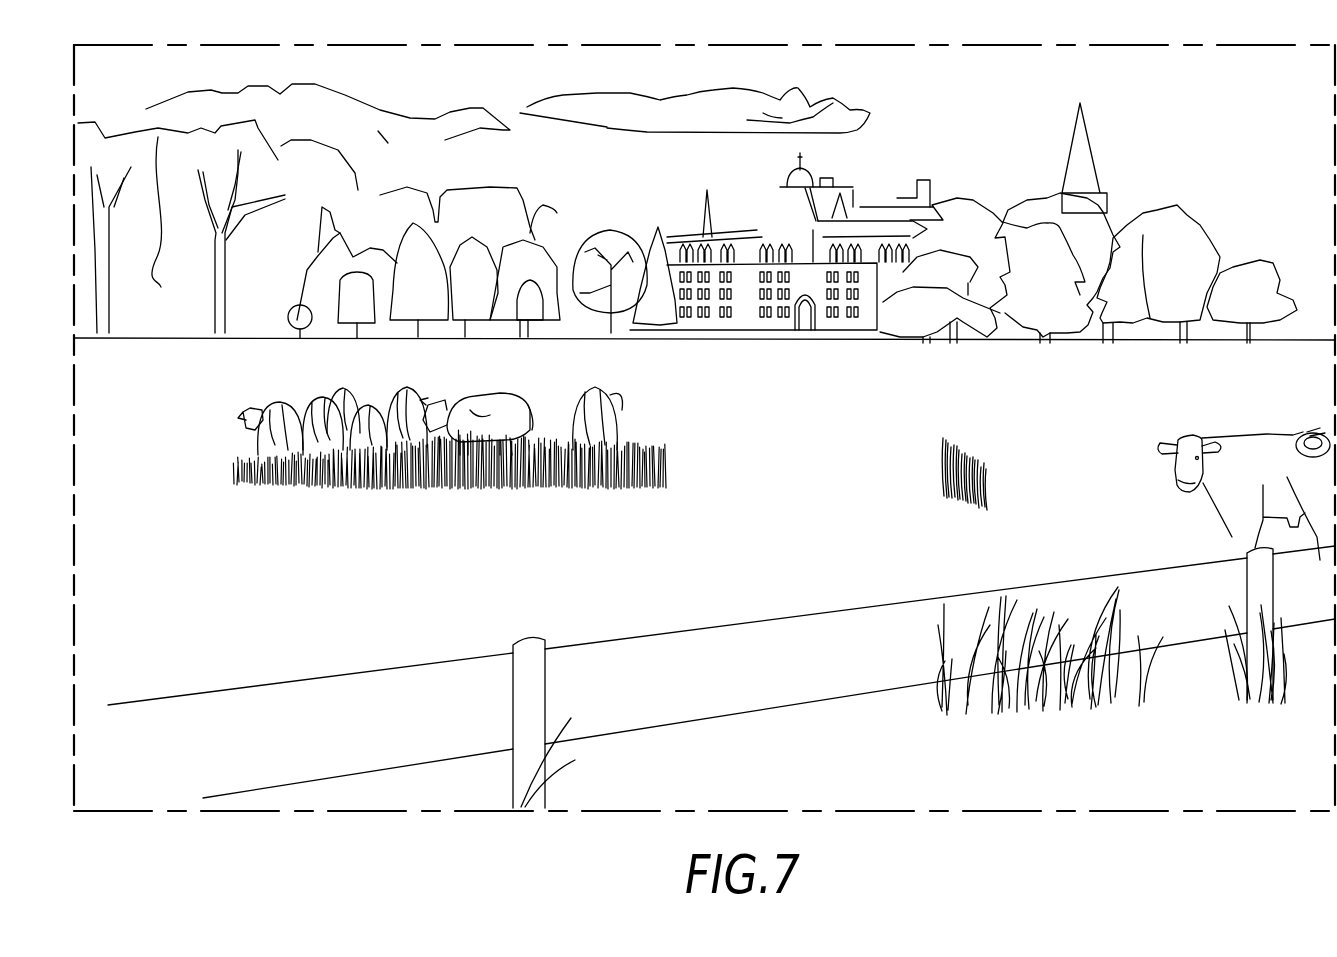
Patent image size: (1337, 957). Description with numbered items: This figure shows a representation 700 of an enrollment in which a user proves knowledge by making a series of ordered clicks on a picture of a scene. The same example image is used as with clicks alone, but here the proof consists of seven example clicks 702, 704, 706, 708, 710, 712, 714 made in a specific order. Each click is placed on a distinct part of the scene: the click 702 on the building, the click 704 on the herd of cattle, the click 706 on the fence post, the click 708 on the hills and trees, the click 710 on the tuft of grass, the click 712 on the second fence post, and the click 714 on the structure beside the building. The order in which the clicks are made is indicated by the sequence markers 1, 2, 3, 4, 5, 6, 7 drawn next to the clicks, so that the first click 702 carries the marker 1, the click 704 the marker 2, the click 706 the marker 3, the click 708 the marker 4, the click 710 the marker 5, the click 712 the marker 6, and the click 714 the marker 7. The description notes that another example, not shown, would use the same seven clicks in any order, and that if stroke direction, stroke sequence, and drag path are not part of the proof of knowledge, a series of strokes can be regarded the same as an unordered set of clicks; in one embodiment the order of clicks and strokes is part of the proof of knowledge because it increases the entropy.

The representation 700 is at (56, 537).
The click 702 is at (768, 208).
The click 704 is at (547, 390).
The click 706 is at (506, 597).
The click 708 is at (372, 192).
The click 710 is at (973, 427).
The click 712 is at (1233, 577).
The click 714 is at (882, 157).
The region 1 is at (781, 241).
The region 2 is at (449, 434).
The region 3 is at (721, 677).
The region 4 is at (474, 211).
The region 5 is at (965, 463).
The region 6 is at (1244, 566).
The region 7 is at (1082, 223).